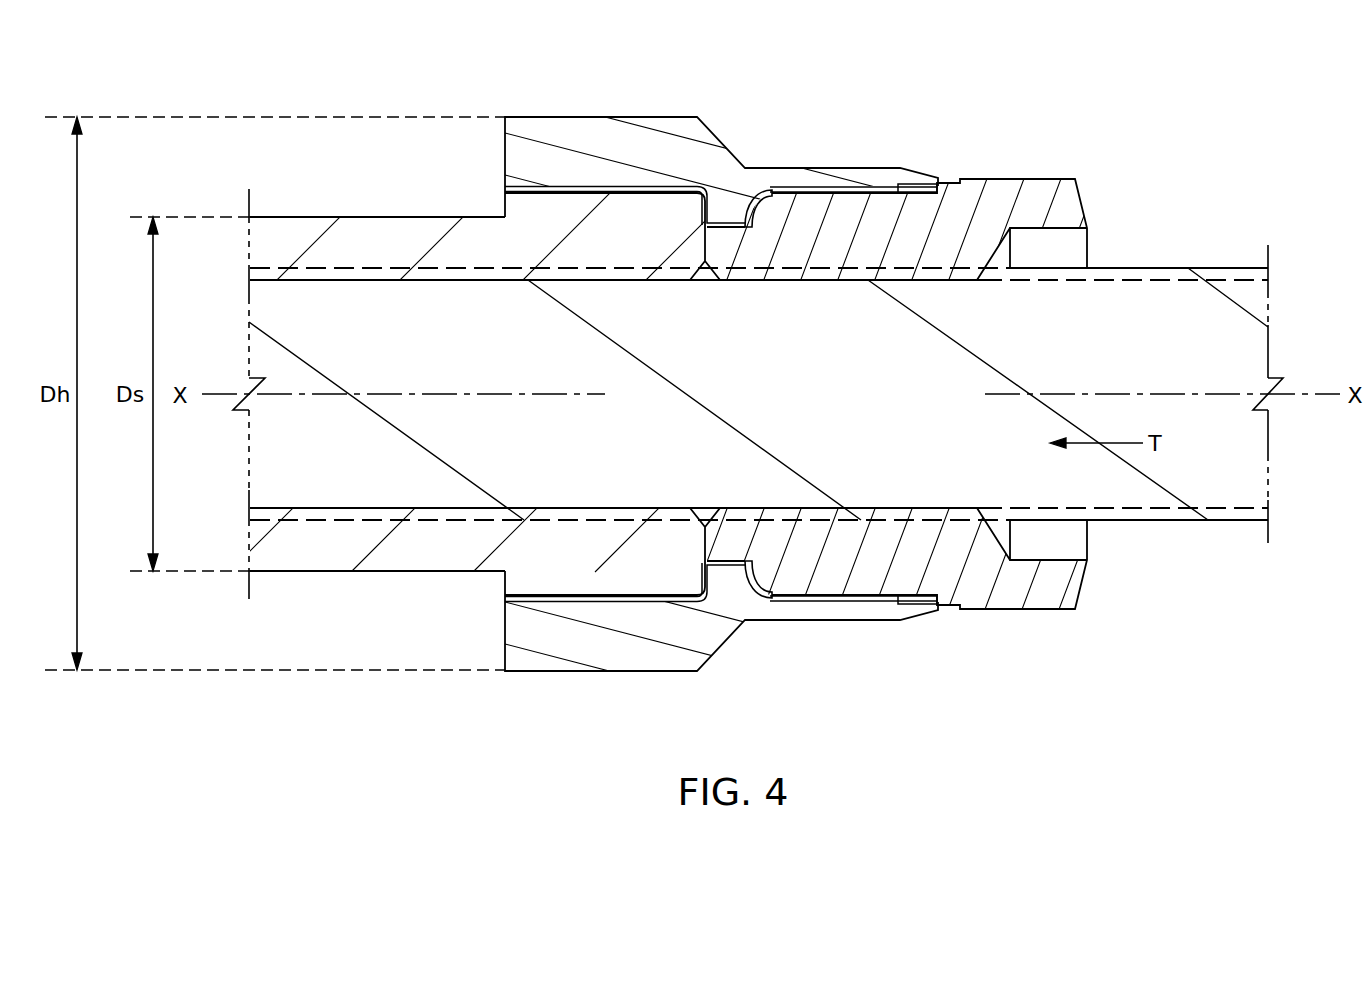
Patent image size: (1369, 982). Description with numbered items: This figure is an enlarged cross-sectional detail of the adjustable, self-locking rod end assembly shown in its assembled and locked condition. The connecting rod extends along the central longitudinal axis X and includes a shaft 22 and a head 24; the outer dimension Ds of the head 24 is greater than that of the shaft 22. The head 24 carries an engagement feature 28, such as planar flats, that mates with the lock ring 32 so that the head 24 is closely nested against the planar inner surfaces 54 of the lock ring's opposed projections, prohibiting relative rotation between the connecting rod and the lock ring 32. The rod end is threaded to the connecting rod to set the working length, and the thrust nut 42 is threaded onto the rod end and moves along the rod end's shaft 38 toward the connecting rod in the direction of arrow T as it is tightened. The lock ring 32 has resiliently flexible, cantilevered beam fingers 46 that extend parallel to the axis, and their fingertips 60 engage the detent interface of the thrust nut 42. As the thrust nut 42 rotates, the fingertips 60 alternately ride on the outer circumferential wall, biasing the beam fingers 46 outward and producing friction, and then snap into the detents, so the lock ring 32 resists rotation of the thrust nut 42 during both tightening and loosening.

The shaft 22 is at (403, 205).
The head 24 is at (528, 558).
The engagement feature 28 is at (597, 193).
The lock ring 32 is at (520, 690).
The shaft 38 is at (1207, 260).
The thrust nut 42 is at (1023, 166).
The beam finger 46 is at (783, 168).
The inner surface 54 is at (530, 188).
The fingertip 60 is at (905, 172).